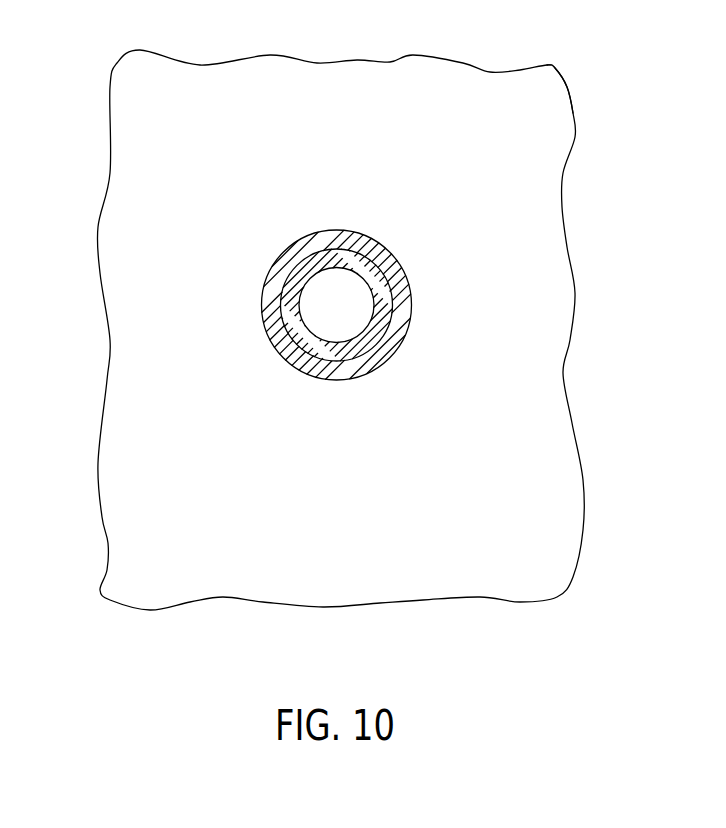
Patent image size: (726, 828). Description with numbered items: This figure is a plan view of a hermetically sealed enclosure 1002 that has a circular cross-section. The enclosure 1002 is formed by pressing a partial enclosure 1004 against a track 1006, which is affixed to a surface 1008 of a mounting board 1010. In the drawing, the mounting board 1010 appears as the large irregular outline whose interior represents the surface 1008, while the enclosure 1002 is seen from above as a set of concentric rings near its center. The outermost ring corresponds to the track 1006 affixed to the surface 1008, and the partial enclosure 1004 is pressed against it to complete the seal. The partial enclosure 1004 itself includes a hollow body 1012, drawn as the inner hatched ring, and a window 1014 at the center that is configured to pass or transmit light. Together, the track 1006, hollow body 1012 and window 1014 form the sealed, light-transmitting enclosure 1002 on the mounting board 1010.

The hermetically sealed enclosure 1002 is at (310, 311).
The partial enclosure 1004 is at (333, 249).
The track 1006 is at (358, 232).
The surface 1008 is at (470, 523).
The mounting board 1010 is at (568, 95).
The hollow body 1012 is at (330, 366).
The window 1014 is at (358, 305).